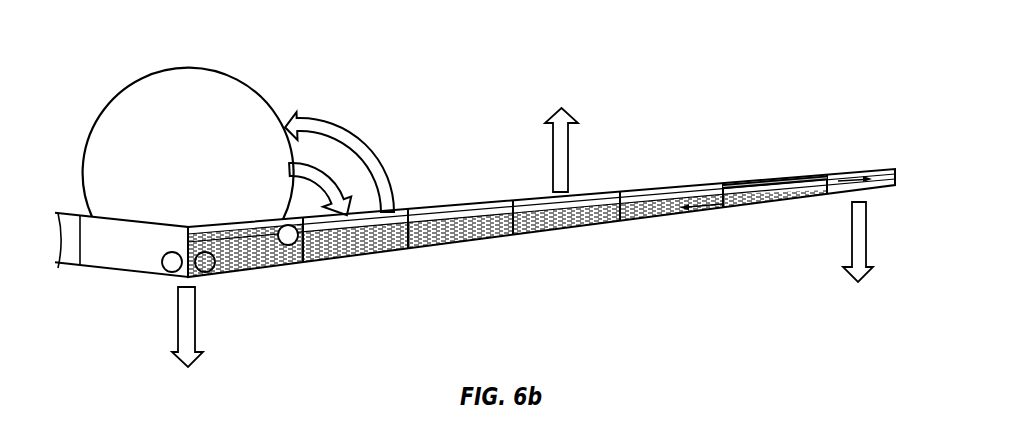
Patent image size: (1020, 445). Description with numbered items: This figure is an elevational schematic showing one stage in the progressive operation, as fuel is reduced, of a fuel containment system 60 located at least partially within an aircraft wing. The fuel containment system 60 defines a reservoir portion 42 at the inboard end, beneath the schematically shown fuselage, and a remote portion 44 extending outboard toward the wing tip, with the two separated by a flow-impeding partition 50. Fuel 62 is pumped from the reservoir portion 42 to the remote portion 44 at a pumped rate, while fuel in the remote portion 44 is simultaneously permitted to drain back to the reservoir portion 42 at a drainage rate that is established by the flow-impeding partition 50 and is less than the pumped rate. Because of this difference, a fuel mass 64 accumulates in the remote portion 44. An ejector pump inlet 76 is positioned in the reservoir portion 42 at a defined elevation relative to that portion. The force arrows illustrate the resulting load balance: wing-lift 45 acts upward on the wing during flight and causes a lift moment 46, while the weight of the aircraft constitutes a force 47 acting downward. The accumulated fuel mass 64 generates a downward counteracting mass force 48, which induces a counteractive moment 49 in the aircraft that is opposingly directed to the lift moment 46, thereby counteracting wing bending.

The reservoir portion 42 is at (258, 297).
The remote portion 44 is at (778, 203).
The wing-lift 45 is at (561, 140).
The lift moment 46 is at (332, 124).
The force 47 is at (187, 342).
The downward counteracting mass force 48 is at (858, 253).
The counteractive moment 49 is at (335, 180).
The flow-impeding partition 50 is at (723, 184).
The fuel containment system 60 is at (735, 112).
The fuel 62 is at (390, 250).
The fuel mass 64 is at (768, 174).
The ejector pump inlet 76 is at (289, 250).